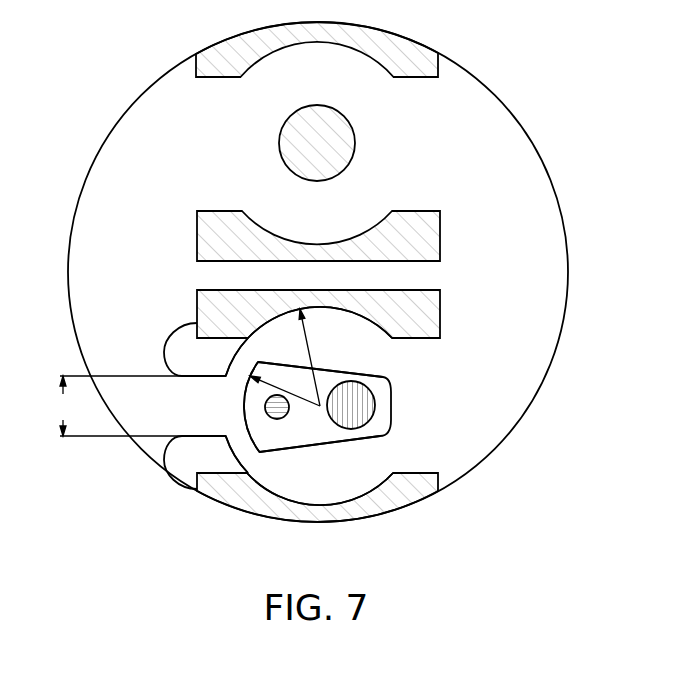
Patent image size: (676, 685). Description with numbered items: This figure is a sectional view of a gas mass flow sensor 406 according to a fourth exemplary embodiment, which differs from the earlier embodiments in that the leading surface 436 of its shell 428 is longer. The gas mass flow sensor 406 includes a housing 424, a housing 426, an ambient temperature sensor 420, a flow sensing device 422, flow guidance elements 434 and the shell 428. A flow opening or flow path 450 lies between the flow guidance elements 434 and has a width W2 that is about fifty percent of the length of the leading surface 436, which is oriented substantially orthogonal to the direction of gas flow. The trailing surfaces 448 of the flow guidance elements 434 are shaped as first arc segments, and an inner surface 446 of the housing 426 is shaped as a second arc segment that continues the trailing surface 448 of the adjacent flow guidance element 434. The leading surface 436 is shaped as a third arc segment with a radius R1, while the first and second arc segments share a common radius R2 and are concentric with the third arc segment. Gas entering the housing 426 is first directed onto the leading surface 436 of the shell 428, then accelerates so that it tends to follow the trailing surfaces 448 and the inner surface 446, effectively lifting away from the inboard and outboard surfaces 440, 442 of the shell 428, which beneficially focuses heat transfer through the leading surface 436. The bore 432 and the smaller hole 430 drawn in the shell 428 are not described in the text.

The gas mass flow sensor 406 is at (507, 101).
The ambient temperature sensor 420 is at (354, 128).
The flow sensing device 422 is at (390, 406).
The housing 424 is at (197, 63).
The housing 426 is at (198, 308).
The shell 428 is at (387, 421).
The pivot hole 430 is at (276, 419).
The bore 432 is at (352, 431).
The flow guidance elements 434 is at (165, 351).
The leading surface 436 is at (246, 409).
The inboard surface 440 is at (382, 372).
The outboard surface 442 is at (320, 447).
The inner surface 446 is at (266, 325).
The trailing surfaces 448 is at (245, 347).
The flow opening or flow path 450 is at (162, 424).
The radius R1 is at (285, 389).
The common radius R2 is at (308, 344).
The width W2 is at (62, 406).